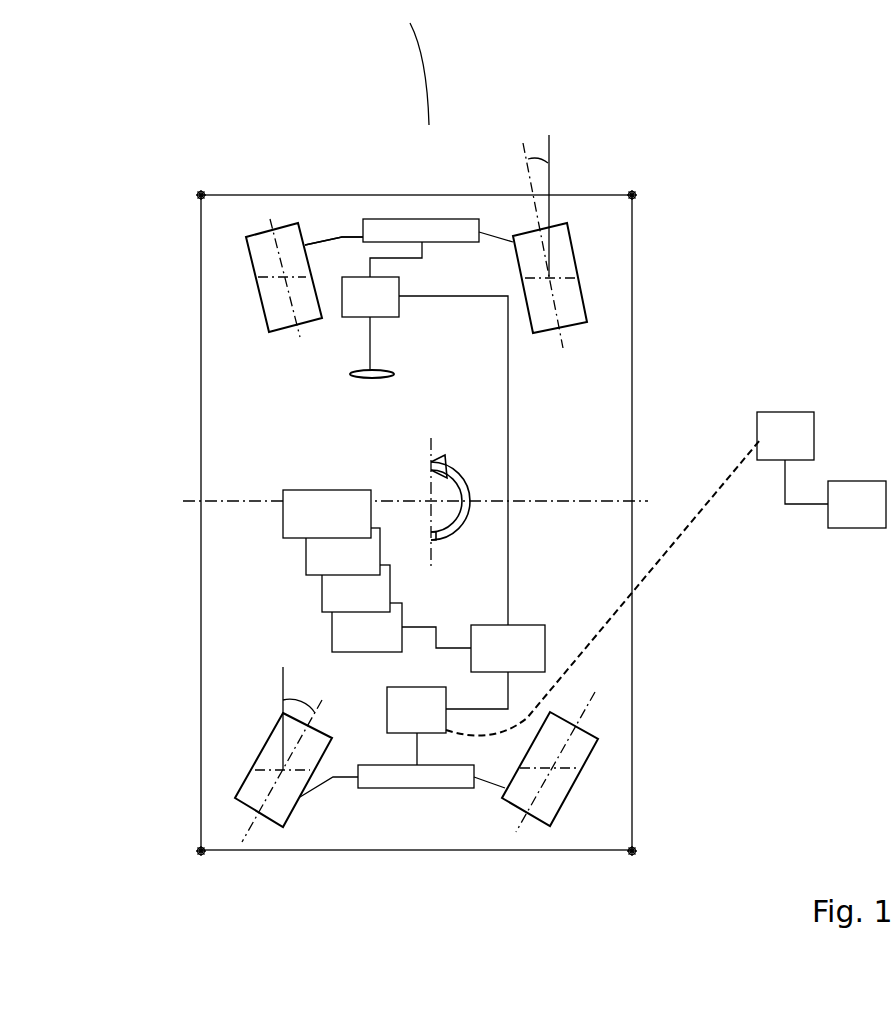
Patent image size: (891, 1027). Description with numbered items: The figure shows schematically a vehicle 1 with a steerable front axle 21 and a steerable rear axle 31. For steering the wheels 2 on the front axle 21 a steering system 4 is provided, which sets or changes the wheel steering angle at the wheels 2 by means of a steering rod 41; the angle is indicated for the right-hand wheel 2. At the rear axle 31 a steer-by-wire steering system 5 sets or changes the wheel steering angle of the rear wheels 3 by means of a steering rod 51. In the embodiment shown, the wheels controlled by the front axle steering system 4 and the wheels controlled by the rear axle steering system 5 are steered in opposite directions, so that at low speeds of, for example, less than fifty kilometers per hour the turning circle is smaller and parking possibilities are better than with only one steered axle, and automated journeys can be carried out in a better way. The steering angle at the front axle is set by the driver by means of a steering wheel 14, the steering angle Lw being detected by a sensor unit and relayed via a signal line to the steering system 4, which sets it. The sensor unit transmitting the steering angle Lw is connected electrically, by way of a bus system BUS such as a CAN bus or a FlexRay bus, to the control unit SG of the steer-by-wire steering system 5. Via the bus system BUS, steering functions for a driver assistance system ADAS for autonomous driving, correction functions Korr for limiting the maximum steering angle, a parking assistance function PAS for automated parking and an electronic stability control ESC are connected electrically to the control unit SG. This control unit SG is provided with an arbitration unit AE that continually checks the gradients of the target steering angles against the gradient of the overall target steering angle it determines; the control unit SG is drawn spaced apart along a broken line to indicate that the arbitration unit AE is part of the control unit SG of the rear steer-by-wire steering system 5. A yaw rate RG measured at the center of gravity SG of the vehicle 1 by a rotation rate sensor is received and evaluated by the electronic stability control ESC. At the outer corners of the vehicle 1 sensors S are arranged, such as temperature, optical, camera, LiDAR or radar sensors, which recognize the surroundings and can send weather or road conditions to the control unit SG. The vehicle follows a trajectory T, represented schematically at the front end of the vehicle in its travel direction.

The vehicle 1 is at (152, 622).
The wheels 2 is at (254, 265).
The rear wheels 3 is at (249, 780).
The steering system 4 is at (430, 232).
The steering rod 41 is at (342, 230).
The steer-by-wire steering system 5 is at (418, 777).
The steering rod 51 is at (333, 777).
The steering wheel 14 is at (350, 374).
The front axle 21 is at (150, 255).
The rear axle 31 is at (678, 775).
The trajectory T is at (429, 92).
The sensors S is at (632, 195).
The control unit SG is at (428, 500).
The yaw rate RG is at (437, 538).
The arbitration unit AE is at (857, 504).
The steering angle Lw is at (425, 493).
The driver assistance system ADAS is at (327, 514).
The correction functions Korr is at (343, 551).
The parking assistance function PAS is at (356, 588).
The electronic stability control ESC is at (367, 627).
The bus system BUS is at (473, 648).